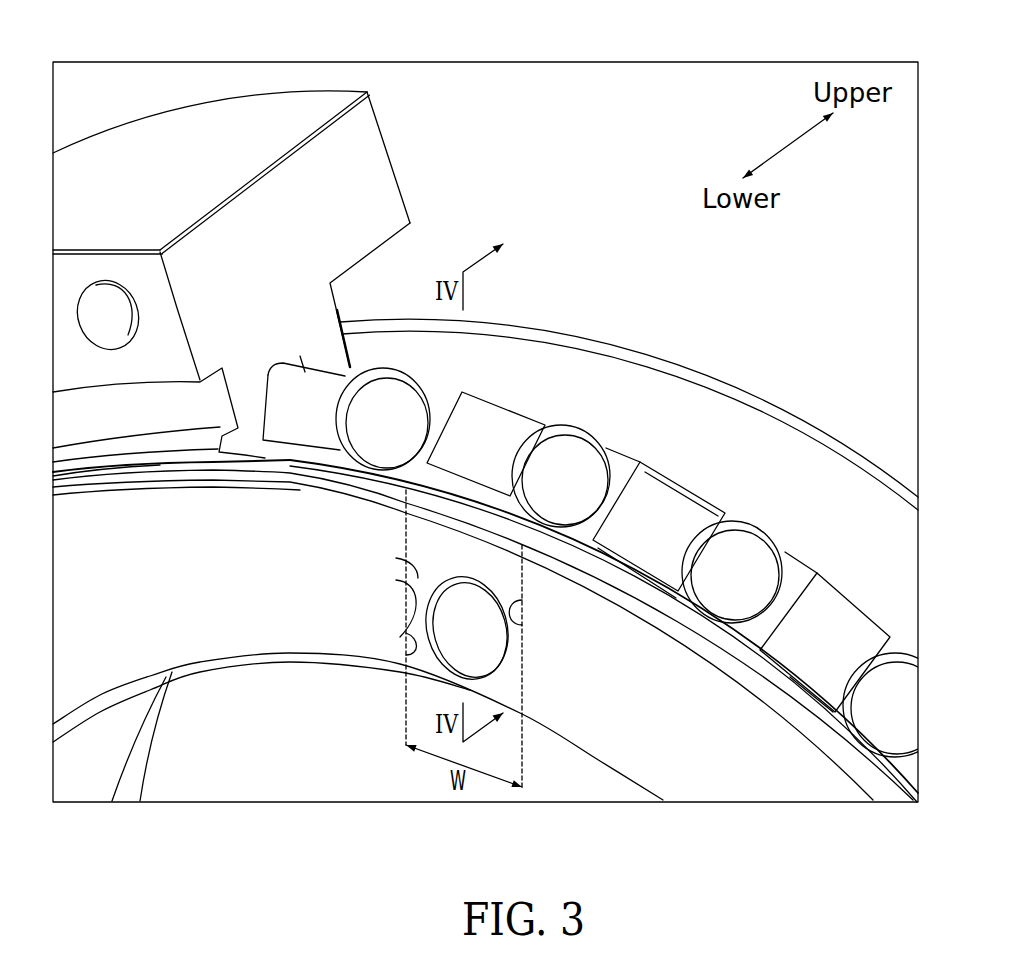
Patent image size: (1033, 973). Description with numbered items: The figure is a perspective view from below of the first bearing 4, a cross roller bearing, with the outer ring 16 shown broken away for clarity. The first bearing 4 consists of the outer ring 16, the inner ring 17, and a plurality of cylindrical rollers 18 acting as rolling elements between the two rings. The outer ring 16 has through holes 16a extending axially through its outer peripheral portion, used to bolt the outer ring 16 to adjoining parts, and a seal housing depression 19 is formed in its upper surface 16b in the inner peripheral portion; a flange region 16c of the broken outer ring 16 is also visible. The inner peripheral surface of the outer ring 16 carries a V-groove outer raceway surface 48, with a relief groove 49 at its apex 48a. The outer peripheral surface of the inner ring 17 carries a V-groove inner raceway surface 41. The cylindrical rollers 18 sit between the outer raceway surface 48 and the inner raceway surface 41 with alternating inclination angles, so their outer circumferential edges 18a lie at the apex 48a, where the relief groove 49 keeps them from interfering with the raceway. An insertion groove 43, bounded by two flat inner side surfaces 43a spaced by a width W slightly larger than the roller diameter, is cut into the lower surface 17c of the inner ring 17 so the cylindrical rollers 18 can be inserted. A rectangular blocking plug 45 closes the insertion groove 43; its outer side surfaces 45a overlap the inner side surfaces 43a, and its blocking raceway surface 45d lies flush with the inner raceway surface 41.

The first bearing 4 is at (800, 343).
The outer ring 16 is at (222, 95).
The through holes 16a is at (108, 283).
The upper surface 16b is at (387, 150).
The bracket flange 16c is at (97, 368).
The inner ring 17 is at (847, 477).
The lower surface 17c is at (698, 748).
The cylindrical rollers 18 is at (563, 440).
The outer circumferential edges 18a is at (680, 500).
The seal housing depression 19 is at (393, 240).
The inner raceway surface 41 is at (750, 660).
The insertion groove 43 is at (430, 598).
The inner side surfaces 43a is at (428, 652).
The blocking plug 45 is at (425, 565).
The outer side surfaces 45a is at (405, 508).
The blocking raceway surface 45d is at (477, 512).
The outer raceway surface 48 is at (337, 310).
The apex 48a is at (305, 358).
The relief groove 49 is at (275, 350).